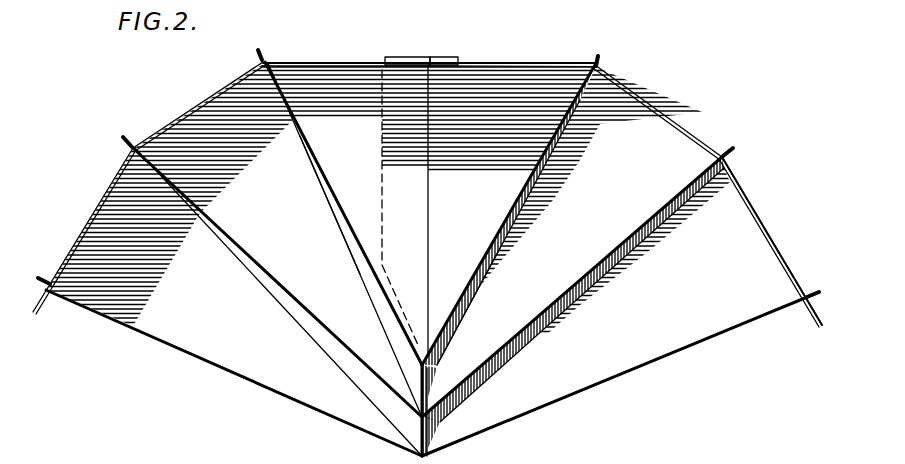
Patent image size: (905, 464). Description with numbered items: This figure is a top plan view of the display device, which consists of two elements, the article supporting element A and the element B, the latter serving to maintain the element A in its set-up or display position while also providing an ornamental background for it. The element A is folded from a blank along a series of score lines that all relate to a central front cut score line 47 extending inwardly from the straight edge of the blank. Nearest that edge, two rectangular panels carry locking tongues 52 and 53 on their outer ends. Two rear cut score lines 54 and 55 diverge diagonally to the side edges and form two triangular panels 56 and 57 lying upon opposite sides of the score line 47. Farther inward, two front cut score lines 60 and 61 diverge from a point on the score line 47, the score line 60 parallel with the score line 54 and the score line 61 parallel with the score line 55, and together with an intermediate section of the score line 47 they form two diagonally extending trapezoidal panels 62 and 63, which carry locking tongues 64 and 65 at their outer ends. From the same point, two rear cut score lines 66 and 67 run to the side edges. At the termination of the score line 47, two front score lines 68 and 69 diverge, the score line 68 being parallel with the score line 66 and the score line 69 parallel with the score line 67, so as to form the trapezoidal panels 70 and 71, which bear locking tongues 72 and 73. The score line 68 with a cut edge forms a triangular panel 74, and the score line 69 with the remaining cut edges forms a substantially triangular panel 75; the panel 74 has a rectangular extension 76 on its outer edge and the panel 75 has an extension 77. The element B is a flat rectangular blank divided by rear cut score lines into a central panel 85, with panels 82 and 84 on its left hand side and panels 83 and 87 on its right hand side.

The front cut score line 47 is at (428, 368).
The locking tongue 52 is at (40, 277).
The locking tongue 53 is at (811, 292).
The rear cut score line 54 is at (337, 367).
The rear cut score line 55 is at (527, 357).
The triangular panel 56 is at (385, 199).
The triangular panel 57 is at (613, 370).
The front cut score line 60 is at (300, 303).
The front cut score line 61 is at (597, 267).
The trapezoidal panel 62 is at (307, 330).
The trapezoidal panel 63 is at (547, 332).
The locking tongue 64 is at (125, 135).
The locking tongue 65 is at (732, 148).
The rear cut score line 66 is at (340, 228).
The rear cut score line 67 is at (493, 295).
The front score line 68 is at (340, 205).
The front score line 69 is at (520, 203).
The trapezoidal panel 70 is at (358, 260).
The trapezoidal panel 71 is at (520, 247).
The locking tongue 72 is at (258, 61).
The locking tongue 73 is at (599, 62).
The triangular panel 74 is at (376, 207).
The panel 75 is at (451, 210).
The rectangular extension 76 is at (398, 58).
The extension 77 is at (440, 58).
The panel 82 is at (100, 197).
The panel 83 is at (640, 100).
The panel 84 is at (187, 113).
The central panel 85 is at (508, 66).
The panel 87 is at (753, 207).
The article supporting element A is at (655, 364).
The background element B is at (738, 172).